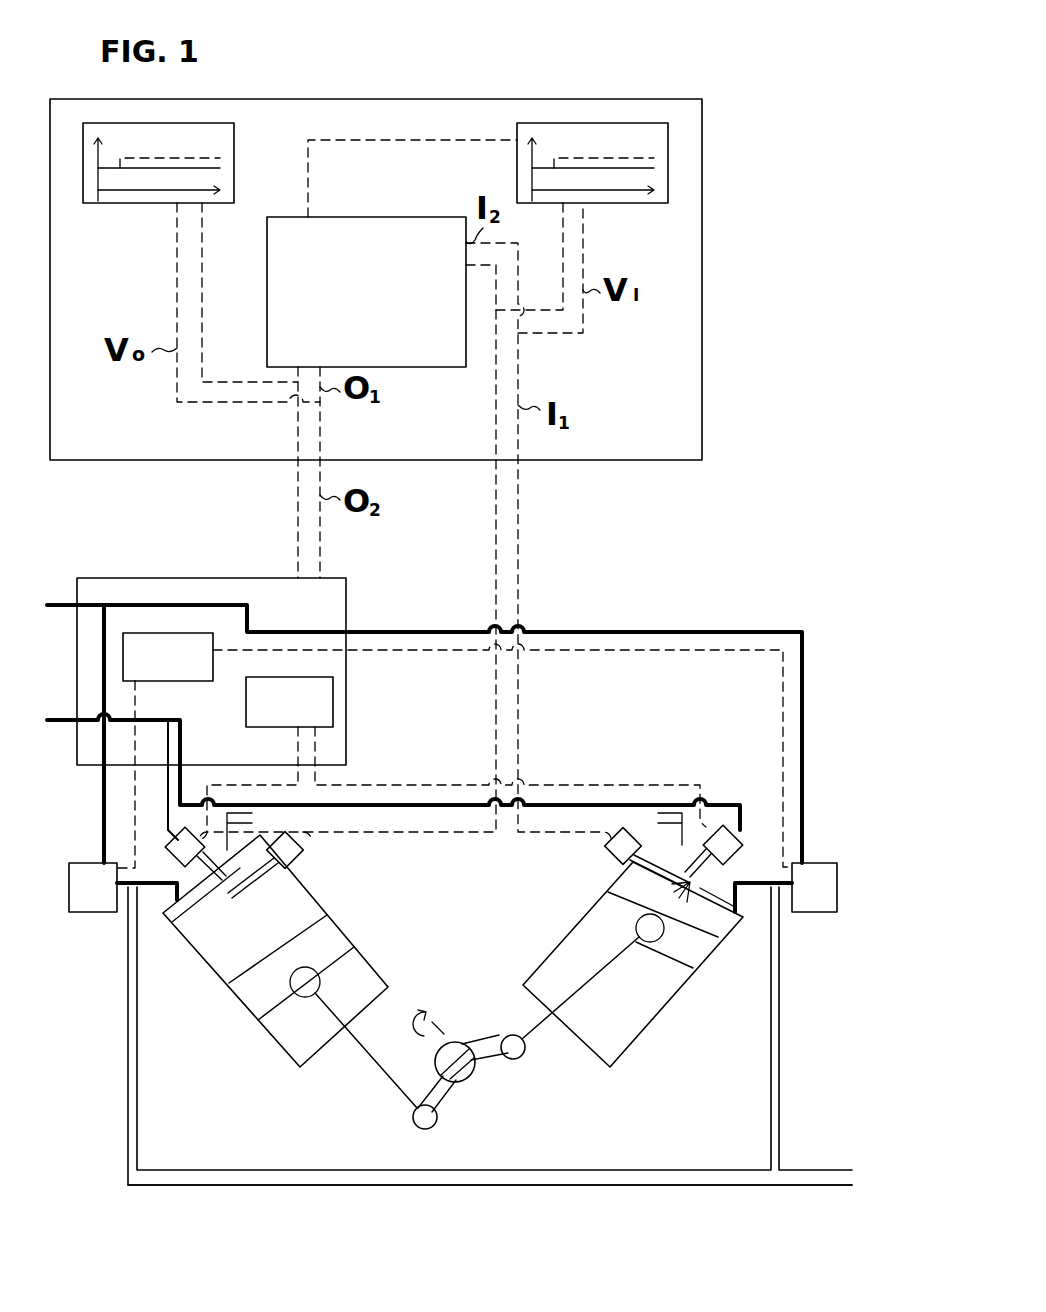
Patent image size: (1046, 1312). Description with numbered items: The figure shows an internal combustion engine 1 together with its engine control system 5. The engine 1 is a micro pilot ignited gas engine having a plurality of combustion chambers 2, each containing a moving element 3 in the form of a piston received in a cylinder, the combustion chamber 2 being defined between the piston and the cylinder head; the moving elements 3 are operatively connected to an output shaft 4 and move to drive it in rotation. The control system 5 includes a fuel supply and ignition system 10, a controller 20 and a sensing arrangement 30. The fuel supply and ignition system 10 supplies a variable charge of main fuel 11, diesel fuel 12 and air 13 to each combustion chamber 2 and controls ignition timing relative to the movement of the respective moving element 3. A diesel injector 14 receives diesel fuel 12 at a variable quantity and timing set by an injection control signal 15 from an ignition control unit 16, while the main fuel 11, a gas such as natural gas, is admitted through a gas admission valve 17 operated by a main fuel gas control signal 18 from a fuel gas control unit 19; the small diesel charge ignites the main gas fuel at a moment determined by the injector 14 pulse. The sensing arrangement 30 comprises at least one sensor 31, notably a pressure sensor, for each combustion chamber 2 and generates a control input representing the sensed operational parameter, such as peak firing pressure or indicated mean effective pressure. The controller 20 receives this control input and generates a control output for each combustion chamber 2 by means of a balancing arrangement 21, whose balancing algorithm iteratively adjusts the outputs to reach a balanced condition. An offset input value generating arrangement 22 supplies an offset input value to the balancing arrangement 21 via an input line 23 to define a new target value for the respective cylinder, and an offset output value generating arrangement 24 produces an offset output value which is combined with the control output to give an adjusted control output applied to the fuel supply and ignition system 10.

The internal combustion engine 1 is at (656, 1111).
The combustion chamber 2 is at (308, 887).
The moving element 3 is at (289, 998).
The output shaft 4 is at (469, 1080).
The control system 5 is at (718, 25).
The fuel supply and ignition system 10 is at (140, 578).
The main fuel 11 is at (53, 605).
The diesel fuel 12 is at (55, 720).
The air 13 is at (814, 1170).
The diesel injector 14 is at (170, 857).
The injection control signal 15 is at (298, 745).
The ignition control unit 16 is at (299, 711).
The gas admission valve 17 is at (93, 916).
The main fuel gas control signal 18 is at (137, 698).
The fuel gas control unit 19 is at (179, 666).
The controller 20 is at (702, 345).
The balancing arrangement 21 is at (385, 304).
The offset input value generating arrangement 22 is at (640, 205).
The input line 23 is at (393, 150).
The offset output value generating arrangement 24 is at (122, 205).
The sensing arrangement 30 is at (680, 744).
The sensor 31 is at (304, 850).